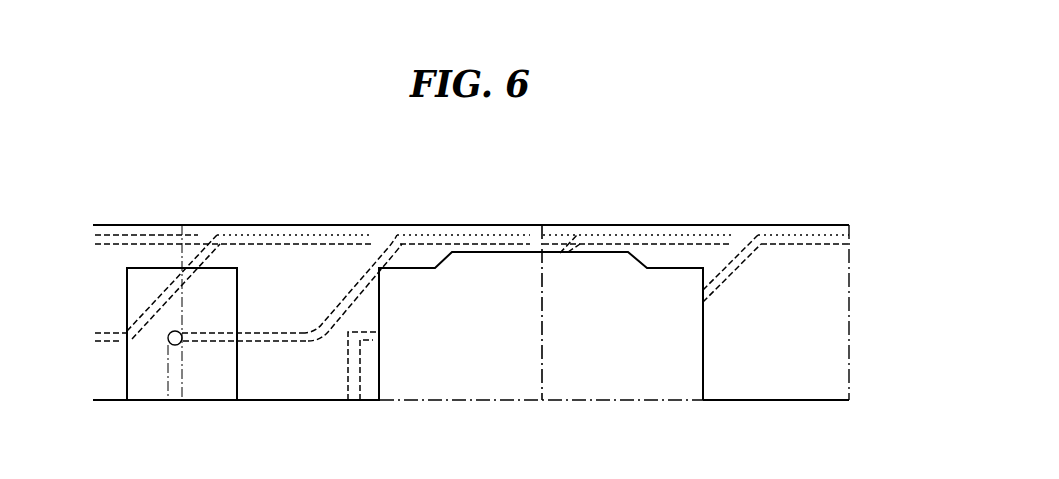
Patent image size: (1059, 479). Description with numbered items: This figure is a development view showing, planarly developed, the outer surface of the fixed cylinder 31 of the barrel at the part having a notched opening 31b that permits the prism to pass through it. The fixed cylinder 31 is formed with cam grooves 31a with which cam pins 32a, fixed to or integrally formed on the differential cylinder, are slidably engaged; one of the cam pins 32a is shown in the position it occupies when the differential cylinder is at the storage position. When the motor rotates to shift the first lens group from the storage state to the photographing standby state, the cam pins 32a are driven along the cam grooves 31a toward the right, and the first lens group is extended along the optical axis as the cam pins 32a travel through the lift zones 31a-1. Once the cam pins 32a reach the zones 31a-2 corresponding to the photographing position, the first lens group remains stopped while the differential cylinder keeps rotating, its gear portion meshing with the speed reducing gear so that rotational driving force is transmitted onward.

The fixed cylinder 31 is at (335, 207).
The cam grooves 31a is at (254, 232).
The lift zones 31a-1 is at (348, 290).
The zones corresponding to the photographing position 31a-2 is at (432, 235).
The notched opening 31b is at (600, 392).
The cam pins 32a is at (180, 333).